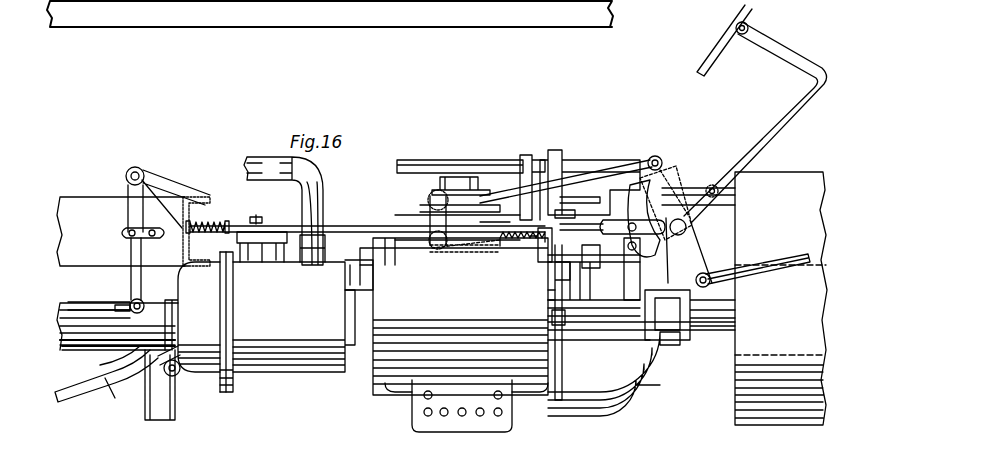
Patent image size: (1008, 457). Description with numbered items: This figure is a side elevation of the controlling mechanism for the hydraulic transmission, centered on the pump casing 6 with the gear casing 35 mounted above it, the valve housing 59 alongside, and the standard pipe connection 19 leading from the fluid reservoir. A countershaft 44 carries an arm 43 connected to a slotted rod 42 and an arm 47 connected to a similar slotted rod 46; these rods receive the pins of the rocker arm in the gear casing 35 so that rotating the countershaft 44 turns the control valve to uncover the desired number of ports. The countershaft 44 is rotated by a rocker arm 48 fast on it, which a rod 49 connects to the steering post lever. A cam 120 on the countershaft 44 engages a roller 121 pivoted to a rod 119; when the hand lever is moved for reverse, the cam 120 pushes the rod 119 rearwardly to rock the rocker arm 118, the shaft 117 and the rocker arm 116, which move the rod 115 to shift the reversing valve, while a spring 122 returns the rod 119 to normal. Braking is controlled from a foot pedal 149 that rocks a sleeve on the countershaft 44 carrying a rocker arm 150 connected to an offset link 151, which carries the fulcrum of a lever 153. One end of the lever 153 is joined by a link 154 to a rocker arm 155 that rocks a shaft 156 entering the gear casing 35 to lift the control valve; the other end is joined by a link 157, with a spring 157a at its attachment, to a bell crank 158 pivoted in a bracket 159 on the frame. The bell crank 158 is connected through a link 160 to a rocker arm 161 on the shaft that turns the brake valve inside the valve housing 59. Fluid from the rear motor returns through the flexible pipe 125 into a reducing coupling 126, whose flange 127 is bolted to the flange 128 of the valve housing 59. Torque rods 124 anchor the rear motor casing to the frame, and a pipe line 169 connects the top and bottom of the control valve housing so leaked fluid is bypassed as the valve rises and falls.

The foot pedal 149 is at (748, 12).
The shaft 117 is at (128, 173).
The rocker arm 118 is at (135, 211).
The rocker arm 116 is at (136, 286).
The rod 115 is at (70, 306).
The flexible pipe 125 is at (172, 332).
The torque rods 124 is at (82, 395).
The reducing coupling 126 is at (192, 317).
The valve housing 59 is at (294, 302).
The flange 127 is at (225, 395).
The flange 128 is at (232, 395).
The spring 122 is at (208, 226).
The standard pipe connection 19 is at (283, 211).
The rod 119 is at (367, 218).
The gear casing 35 is at (423, 165).
The rocker arm 155 is at (430, 196).
The shaft 156 is at (447, 196).
The link 154 is at (465, 248).
The spring 157a is at (500, 246).
The lever 153 is at (532, 236).
The pump casing 6 is at (446, 335).
The link 160 is at (555, 290).
The rocker arm 161 is at (523, 315).
The rod 42 is at (560, 160).
The link 157 is at (580, 192).
The offset link 151 is at (655, 157).
The rocker arm 150 is at (668, 180).
The cam 120 is at (648, 217).
The roller 121 is at (638, 225).
The arm 43 is at (678, 175).
The rod 46 is at (686, 188).
The arm 47 is at (702, 208).
The countershaft 44 is at (690, 228).
The rocker arm 48 is at (712, 287).
The rod 49 is at (758, 277).
The bell crank 158 is at (598, 258).
The bracket 159 is at (632, 262).
The pipe line 169 is at (614, 374).